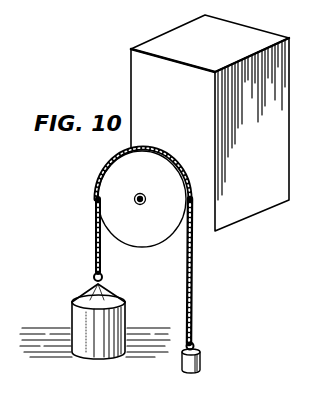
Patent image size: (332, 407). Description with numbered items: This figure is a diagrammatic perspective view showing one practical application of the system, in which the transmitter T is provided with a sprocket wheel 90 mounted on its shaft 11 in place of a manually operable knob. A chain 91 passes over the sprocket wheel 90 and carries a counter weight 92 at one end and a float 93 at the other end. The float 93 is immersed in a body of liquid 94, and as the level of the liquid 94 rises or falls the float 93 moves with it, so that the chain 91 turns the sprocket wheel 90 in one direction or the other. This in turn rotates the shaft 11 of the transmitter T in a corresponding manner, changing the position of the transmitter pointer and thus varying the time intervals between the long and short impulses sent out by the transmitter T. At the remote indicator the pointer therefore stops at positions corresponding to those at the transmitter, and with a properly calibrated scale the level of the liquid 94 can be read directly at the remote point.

The transmitter T is at (253, 208).
The sprocket wheel 90 is at (97, 182).
The shaft 11 is at (135, 200).
The chain 91 is at (193, 272).
The float 93 is at (73, 320).
The liquid 94 is at (140, 328).
The counter weight 92 is at (200, 350).